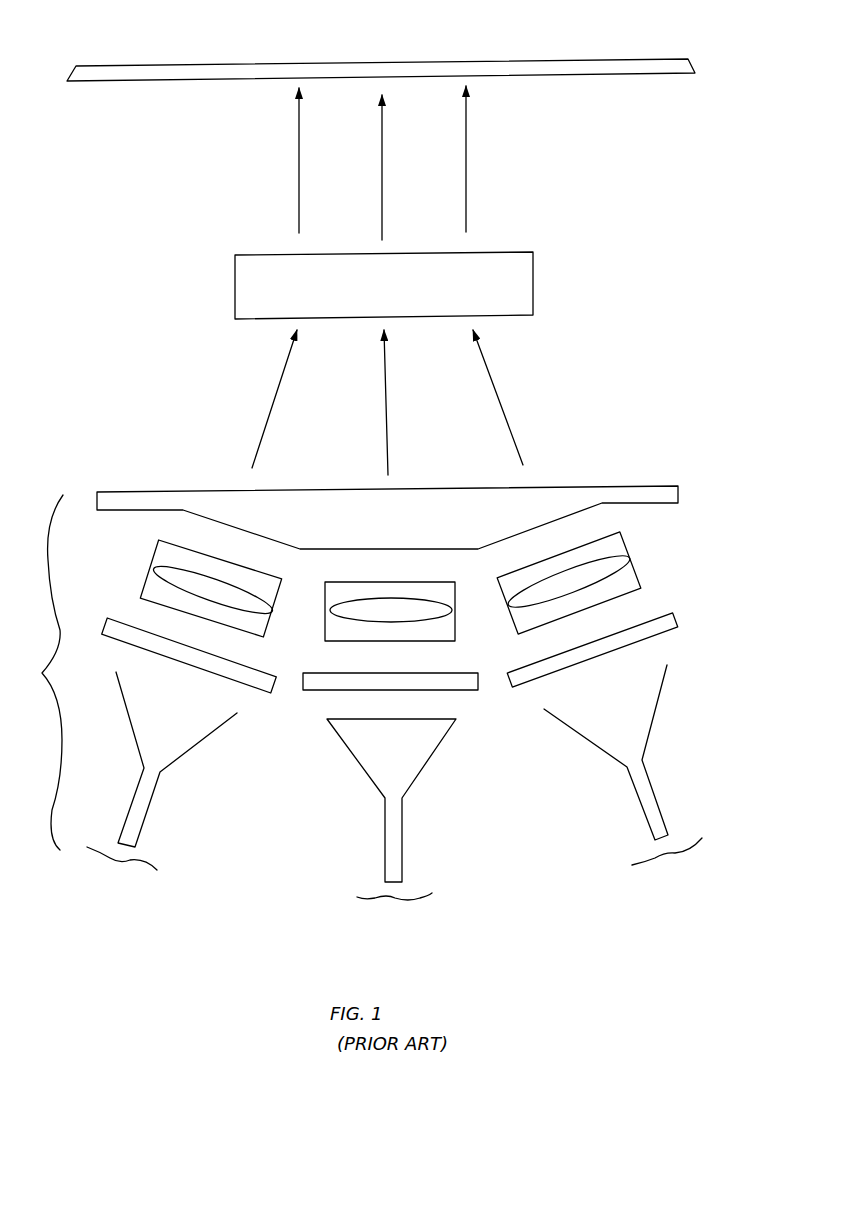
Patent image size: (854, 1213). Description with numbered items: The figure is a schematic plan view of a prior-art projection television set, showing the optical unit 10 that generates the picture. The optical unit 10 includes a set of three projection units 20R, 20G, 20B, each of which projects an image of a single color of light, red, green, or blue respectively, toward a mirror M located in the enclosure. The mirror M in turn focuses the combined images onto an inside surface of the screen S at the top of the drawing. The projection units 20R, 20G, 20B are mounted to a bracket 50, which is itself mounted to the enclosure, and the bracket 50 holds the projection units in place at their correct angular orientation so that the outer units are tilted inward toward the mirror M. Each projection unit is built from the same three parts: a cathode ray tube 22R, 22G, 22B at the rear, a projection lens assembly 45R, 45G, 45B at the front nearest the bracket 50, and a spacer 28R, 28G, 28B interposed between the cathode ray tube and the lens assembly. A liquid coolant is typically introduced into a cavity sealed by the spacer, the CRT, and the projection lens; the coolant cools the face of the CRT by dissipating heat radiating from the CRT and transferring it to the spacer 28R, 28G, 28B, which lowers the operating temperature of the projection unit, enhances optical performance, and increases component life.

The screen S is at (106, 72).
The mirror M is at (518, 283).
The bracket 50 is at (670, 492).
The projection lens assembly 45R is at (203, 562).
The projection lens assembly 45G is at (348, 587).
The projection lens assembly 45B is at (563, 560).
The spacer 28R is at (118, 627).
The spacer 28G is at (317, 683).
The spacer 28B is at (663, 622).
The cathode ray tube 22R is at (175, 737).
The cathode ray tube 22G is at (403, 747).
The cathode ray tube 22B is at (635, 707).
The projection unit 20R is at (122, 872).
The projection unit 20G is at (394, 912).
The projection unit 20B is at (667, 862).
The optical unit 10 is at (41, 672).